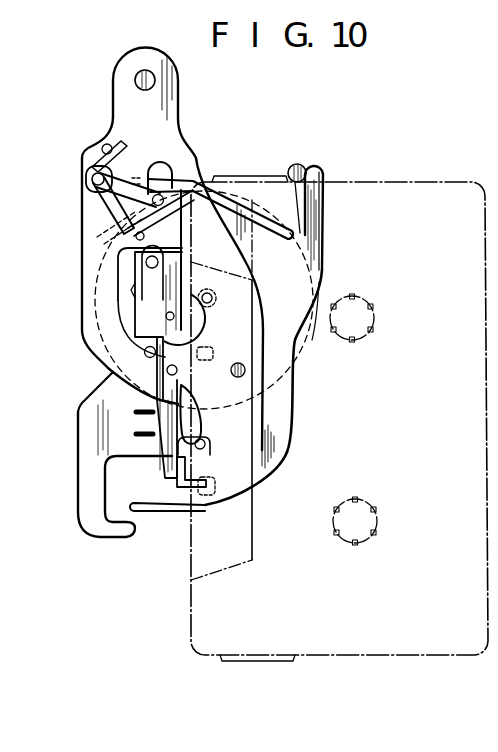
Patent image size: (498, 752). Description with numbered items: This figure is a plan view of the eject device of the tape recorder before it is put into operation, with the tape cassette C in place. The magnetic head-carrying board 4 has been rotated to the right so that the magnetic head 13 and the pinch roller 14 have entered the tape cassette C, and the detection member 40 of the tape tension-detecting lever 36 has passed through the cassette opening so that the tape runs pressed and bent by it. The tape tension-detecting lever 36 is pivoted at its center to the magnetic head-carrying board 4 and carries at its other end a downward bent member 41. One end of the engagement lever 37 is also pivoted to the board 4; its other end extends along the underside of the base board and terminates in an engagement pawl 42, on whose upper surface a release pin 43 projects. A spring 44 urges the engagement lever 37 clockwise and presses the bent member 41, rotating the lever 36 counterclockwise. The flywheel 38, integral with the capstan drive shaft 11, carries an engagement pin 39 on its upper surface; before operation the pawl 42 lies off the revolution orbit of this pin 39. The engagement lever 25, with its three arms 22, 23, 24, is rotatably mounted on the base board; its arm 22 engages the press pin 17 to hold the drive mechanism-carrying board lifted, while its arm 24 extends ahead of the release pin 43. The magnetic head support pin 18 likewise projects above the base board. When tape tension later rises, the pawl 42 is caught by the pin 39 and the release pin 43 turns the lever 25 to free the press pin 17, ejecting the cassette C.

The magnetic head-carrying board 4 is at (80, 155).
The capstan drive shaft 11 is at (213, 298).
The magnetic head 13 is at (204, 430).
The pinch roller 14 is at (200, 324).
The press pin 17 is at (294, 164).
The magnetic head support pin 18 is at (139, 71).
The arm 22 is at (322, 172).
The arm 23 is at (168, 512).
The arm 24 is at (160, 182).
The engagement lever 25 is at (334, 421).
The tape tension-detecting lever 36 is at (82, 281).
The engagement lever 37 is at (86, 189).
The flywheel 38 is at (312, 340).
The engagement pin 39 is at (238, 377).
The detection means 40 is at (199, 477).
The bent member 41 is at (97, 237).
The engagement pawl 42 is at (189, 227).
The release pin 43 is at (195, 181).
The spring 44 is at (112, 150).
The tape cassette C is at (191, 607).